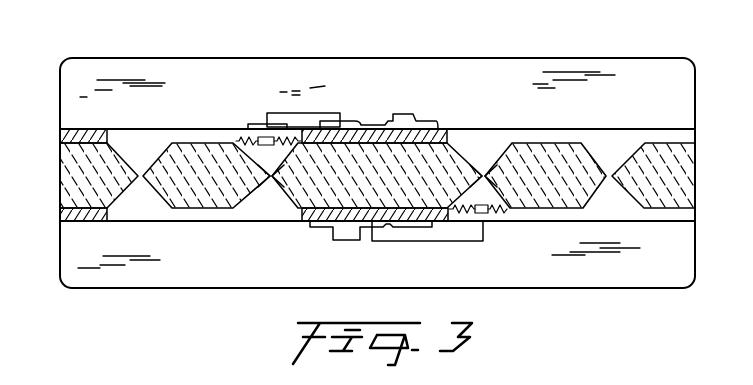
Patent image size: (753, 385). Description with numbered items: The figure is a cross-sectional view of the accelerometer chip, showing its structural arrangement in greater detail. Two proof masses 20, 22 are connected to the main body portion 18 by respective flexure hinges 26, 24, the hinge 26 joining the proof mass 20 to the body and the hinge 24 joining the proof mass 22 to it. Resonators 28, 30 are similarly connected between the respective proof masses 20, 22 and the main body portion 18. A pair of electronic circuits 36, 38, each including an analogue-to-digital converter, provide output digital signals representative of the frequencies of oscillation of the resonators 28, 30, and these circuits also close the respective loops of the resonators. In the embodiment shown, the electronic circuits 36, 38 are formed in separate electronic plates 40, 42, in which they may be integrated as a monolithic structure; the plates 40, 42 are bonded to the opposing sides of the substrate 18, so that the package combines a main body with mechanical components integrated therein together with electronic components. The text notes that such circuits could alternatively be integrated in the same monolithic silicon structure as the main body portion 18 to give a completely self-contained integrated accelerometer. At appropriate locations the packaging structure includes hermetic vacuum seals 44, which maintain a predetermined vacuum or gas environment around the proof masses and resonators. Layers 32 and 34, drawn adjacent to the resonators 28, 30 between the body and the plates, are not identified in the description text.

The main body portion 18 is at (483, 166).
The proof mass 20 is at (205, 148).
The proof mass 22 is at (553, 150).
The flexure hinge 24 is at (486, 172).
The flexure hinge 26 is at (273, 184).
The resonator 28 is at (242, 136).
The resonator 30 is at (492, 214).
The upper conductive layer 32 is at (426, 136).
The lower conductive layer 34 is at (318, 224).
The electronic circuit 36 is at (373, 124).
The electronic circuit 38 is at (345, 238).
The electronic plate 40 is at (522, 68).
The electronic plate 42 is at (660, 275).
The hermetic vacuum seal 44 is at (62, 150).